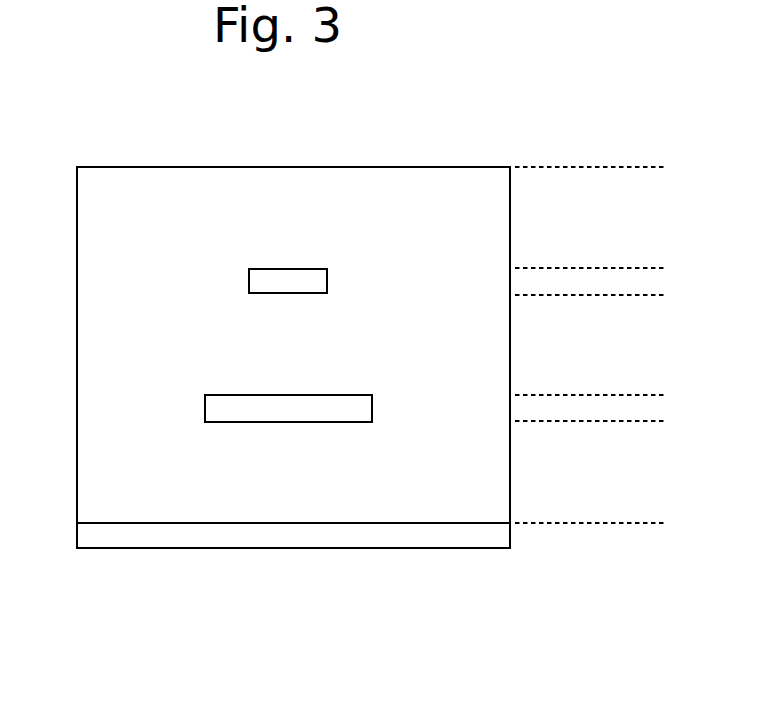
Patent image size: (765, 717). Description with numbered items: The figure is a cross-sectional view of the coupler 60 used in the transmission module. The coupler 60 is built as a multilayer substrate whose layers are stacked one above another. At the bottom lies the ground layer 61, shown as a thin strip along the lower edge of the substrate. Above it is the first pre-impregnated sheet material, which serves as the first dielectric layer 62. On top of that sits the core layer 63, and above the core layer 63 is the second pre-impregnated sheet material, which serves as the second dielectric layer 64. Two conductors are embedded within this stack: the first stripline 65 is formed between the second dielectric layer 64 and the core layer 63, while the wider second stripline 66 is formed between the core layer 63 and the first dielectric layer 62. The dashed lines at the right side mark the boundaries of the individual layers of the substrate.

The coupler 60 is at (104, 154).
The ground layer 61 is at (192, 537).
The first pre-impregnated sheet material (first dielectric layer) 62 is at (591, 472).
The core layer 63 is at (591, 345).
The second pre-impregnated sheet material (second dielectric layer) 64 is at (591, 217).
The first stripline 65 is at (288, 273).
The second stripline 66 is at (315, 412).